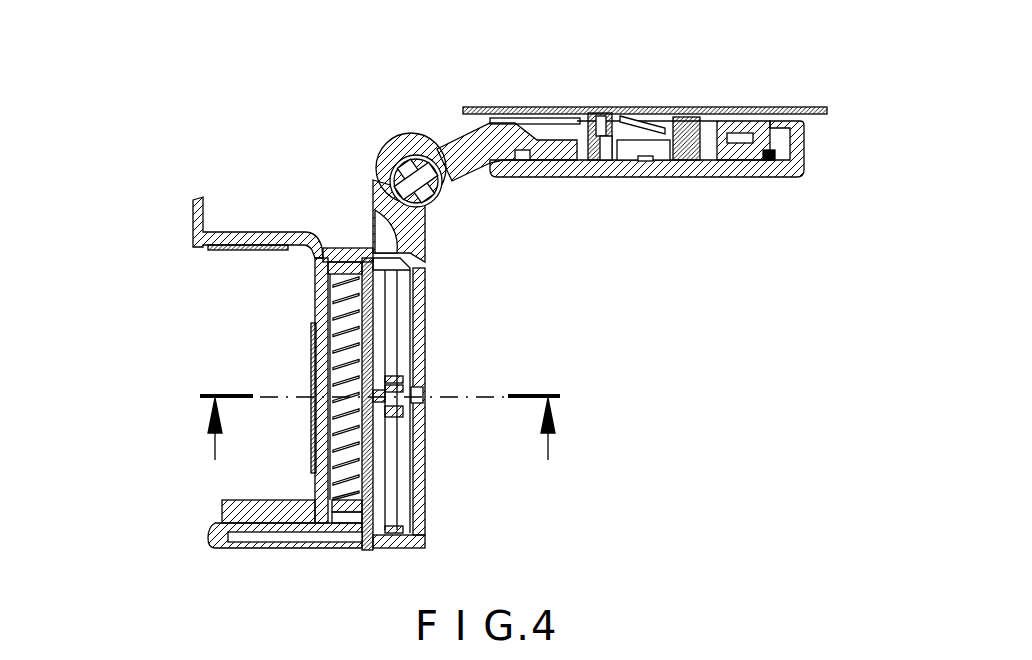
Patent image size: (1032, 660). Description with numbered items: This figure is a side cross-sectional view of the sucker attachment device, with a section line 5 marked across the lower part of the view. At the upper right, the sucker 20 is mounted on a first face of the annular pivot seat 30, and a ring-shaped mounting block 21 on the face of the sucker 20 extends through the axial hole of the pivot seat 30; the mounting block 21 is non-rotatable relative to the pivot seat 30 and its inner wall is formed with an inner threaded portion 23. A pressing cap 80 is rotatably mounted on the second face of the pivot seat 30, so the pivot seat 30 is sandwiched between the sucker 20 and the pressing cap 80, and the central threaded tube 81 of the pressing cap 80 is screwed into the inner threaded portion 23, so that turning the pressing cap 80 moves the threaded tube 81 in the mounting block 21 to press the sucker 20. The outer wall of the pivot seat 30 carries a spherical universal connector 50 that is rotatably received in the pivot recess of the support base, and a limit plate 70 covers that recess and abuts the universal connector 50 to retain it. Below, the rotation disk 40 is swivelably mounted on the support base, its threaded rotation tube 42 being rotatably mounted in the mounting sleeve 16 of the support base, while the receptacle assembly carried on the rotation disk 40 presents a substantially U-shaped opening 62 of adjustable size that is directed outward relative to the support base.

The section line 5- 5 is at (378, 448).
The mounting sleeve 16 is at (393, 380).
The sucker 20 is at (826, 109).
The mounting block 21 is at (602, 114).
The inner threaded portion 23 is at (659, 113).
The pivot seat 30 is at (780, 143).
The rotation disk 40 is at (383, 540).
The threaded rotation tube 42 is at (393, 410).
The universal connector 50 is at (468, 215).
The opening 62 is at (196, 353).
The limit plate 70 is at (380, 162).
The pressing cap 80 is at (658, 161).
The threaded tube 81 is at (613, 145).